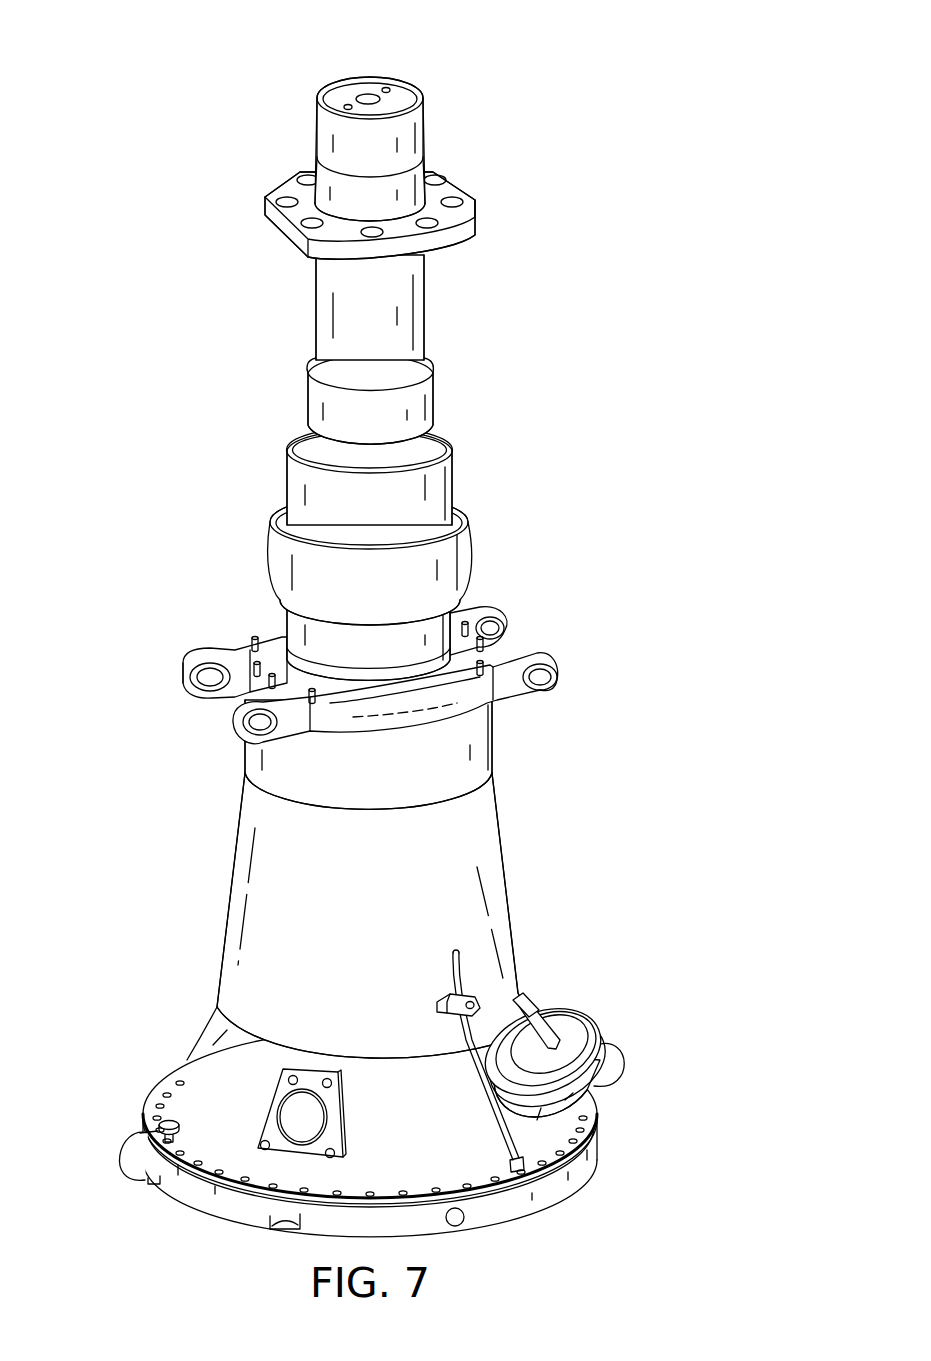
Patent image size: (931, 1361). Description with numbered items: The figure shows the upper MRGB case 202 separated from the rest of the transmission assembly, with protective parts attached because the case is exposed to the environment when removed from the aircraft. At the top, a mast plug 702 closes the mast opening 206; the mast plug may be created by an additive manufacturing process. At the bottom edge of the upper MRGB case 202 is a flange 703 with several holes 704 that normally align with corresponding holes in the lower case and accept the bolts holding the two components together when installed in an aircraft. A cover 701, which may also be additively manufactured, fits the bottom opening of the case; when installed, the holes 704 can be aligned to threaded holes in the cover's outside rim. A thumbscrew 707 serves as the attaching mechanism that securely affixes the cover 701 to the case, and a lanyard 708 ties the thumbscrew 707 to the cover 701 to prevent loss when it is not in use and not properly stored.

The mast opening 206 is at (370, 381).
The mast plug 702 is at (400, 96).
The upper MRGB case 202 is at (510, 888).
The cover 701 is at (211, 1214).
The flange 703 is at (502, 1187).
The holes 704 is at (162, 1092).
The thumbscrew 707 is at (160, 1122).
The lanyard 708 is at (112, 1157).